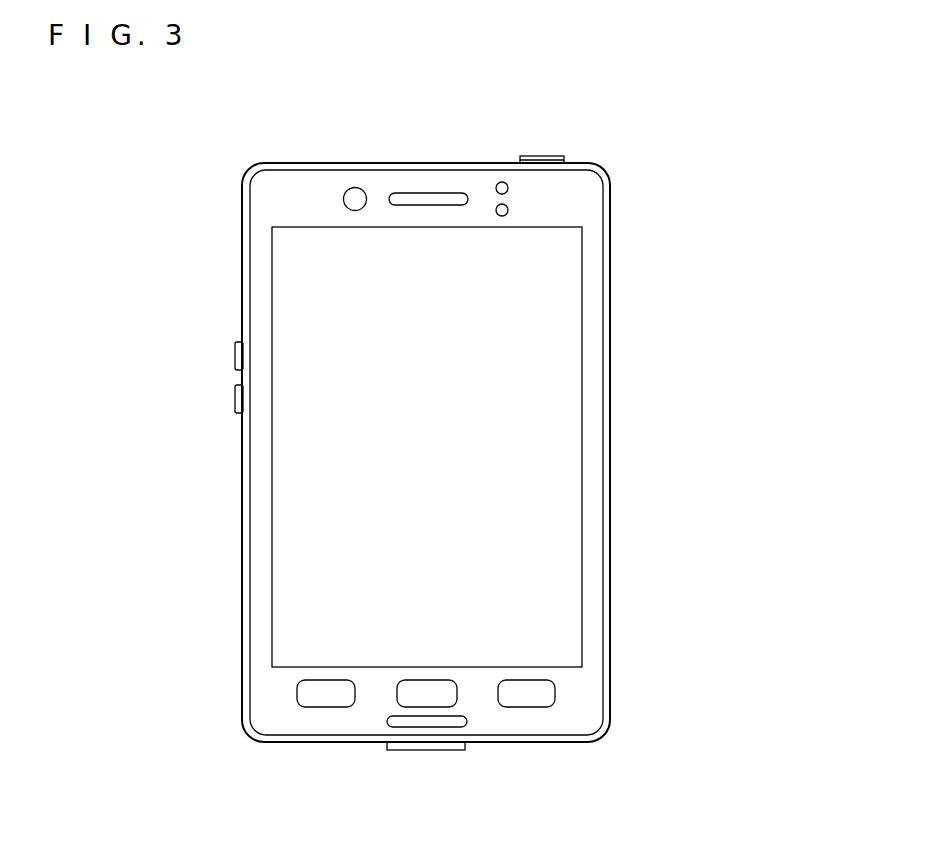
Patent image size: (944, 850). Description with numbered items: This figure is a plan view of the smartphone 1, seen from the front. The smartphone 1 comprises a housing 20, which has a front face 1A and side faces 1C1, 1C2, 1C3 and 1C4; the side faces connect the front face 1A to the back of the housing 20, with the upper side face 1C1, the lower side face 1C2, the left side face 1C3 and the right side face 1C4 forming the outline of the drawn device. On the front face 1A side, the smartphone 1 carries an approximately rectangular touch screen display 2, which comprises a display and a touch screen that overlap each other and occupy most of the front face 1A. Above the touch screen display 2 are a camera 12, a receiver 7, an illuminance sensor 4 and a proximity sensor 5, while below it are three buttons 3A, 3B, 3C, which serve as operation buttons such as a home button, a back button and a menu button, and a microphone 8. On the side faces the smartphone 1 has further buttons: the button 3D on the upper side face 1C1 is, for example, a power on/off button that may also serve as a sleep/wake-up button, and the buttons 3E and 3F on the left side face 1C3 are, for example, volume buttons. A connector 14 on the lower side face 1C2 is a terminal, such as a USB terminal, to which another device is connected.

The smartphone 1 is at (600, 130).
The housing 20 is at (243, 301).
The front face 1A is at (260, 517).
The side face 1C1 is at (389, 163).
The side face 1C2 is at (282, 743).
The side face 1C3 is at (243, 596).
The side face 1C4 is at (611, 540).
The touch screen display 2 is at (515, 396).
The camera 12 is at (355, 187).
The receiver 7 is at (423, 193).
The illuminance sensor 4 is at (502, 182).
The proximity sensor 5 is at (508, 210).
The button 3D is at (541, 156).
The button 3E is at (235, 356).
The button 3F is at (235, 399).
The button 3A is at (326, 707).
The button 3B is at (397, 692).
The button 3C is at (527, 707).
The microphone 8 is at (467, 722).
The connector 14 is at (425, 750).